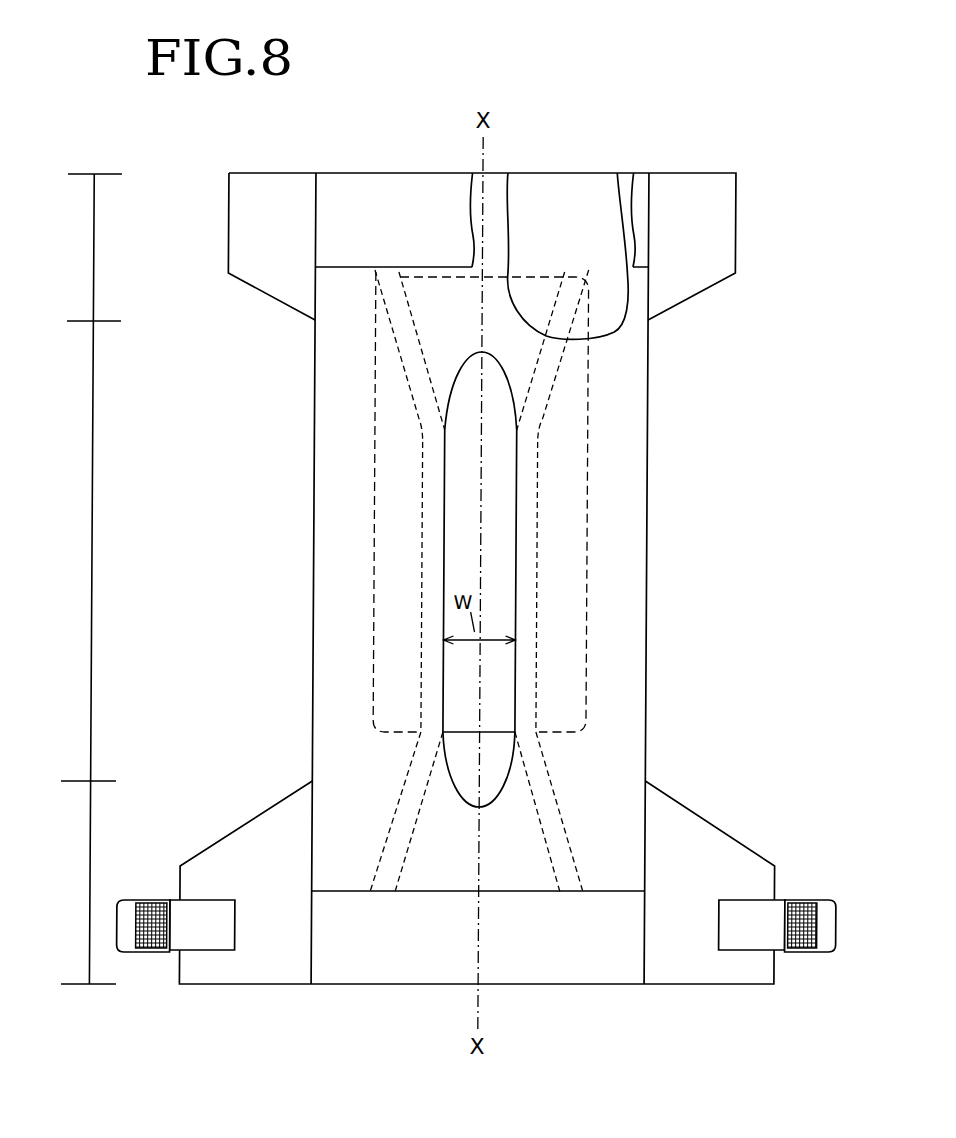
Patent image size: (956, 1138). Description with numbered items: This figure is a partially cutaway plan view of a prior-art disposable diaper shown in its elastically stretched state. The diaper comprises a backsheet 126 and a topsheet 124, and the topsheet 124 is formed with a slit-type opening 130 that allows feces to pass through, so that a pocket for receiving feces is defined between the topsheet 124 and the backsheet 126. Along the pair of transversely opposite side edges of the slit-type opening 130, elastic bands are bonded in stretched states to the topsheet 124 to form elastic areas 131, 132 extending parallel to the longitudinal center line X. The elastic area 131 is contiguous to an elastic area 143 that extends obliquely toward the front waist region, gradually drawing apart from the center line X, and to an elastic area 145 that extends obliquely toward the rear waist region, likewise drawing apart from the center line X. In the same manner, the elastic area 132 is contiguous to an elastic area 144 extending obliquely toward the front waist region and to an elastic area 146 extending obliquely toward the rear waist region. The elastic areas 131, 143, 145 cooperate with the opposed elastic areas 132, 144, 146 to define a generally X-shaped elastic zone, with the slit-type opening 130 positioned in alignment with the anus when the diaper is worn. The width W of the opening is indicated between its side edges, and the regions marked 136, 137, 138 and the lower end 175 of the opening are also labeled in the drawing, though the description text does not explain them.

The topsheet 124 is at (497, 298).
The backsheet 126 is at (593, 190).
The slit-type opening 130 is at (514, 521).
The elastic area 131 is at (527, 660).
The elastic area 132 is at (433, 602).
The crotch region 136 is at (92, 587).
The front waist region 137 is at (93, 247).
The rear waist region 138 is at (92, 893).
The elastic area 143 is at (543, 390).
The elastic area 144 is at (405, 336).
The elastic area 145 is at (563, 843).
The elastic area 146 is at (397, 838).
The rear end of opening 175 is at (493, 759).